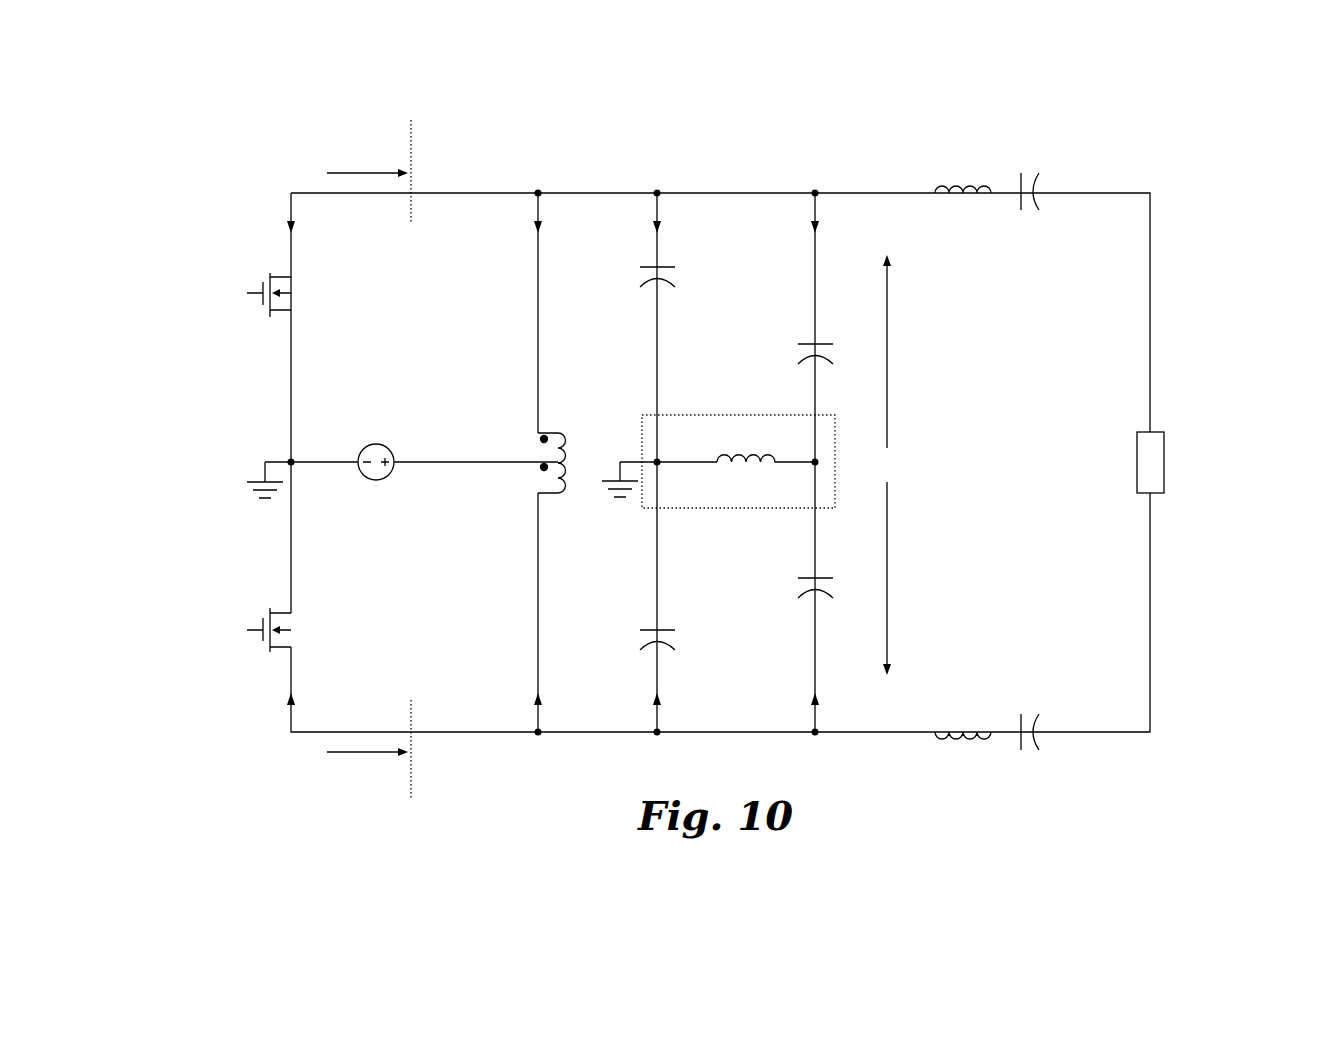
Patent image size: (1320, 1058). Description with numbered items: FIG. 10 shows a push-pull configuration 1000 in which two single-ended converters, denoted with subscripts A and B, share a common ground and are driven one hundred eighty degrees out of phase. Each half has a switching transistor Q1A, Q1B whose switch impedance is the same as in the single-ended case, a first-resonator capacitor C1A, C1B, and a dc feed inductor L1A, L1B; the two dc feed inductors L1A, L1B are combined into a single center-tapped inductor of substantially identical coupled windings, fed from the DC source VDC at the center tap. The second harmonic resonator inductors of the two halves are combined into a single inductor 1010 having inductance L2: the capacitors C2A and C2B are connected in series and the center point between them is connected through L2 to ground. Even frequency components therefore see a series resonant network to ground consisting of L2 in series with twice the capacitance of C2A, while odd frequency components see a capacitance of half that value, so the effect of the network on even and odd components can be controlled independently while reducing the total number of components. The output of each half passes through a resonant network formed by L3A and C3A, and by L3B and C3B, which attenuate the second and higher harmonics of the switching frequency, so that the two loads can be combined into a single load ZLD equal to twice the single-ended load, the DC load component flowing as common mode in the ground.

The push-pull configuration 1000 is at (719, 460).
The single inductor 1010 is at (738, 482).
The transistor Q1A is at (261, 302).
The transistor Q1B is at (261, 617).
The dc feed inductor L1A is at (526, 444).
The dc feed inductor L1B is at (526, 482).
The inductance L2 is at (766, 479).
The capacitor C1A is at (631, 283).
The capacitor C1B is at (631, 638).
The capacitor C2A is at (791, 362).
The capacitor C2B is at (788, 576).
The inductor L3A is at (963, 209).
The inductor L3B is at (963, 718).
The capacitor C3A is at (1028, 210).
The capacitor C3B is at (1028, 715).
The load ZLD is at (1125, 474).
The DC voltage source VDC is at (365, 475).